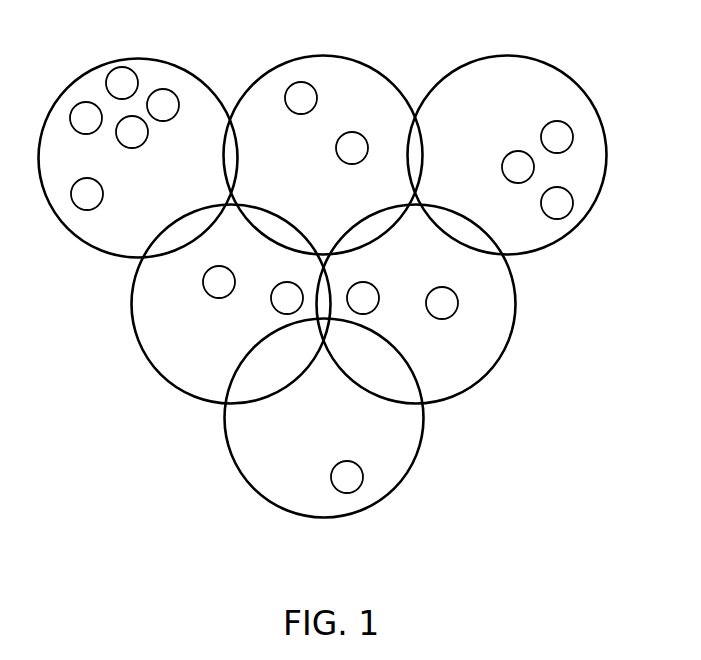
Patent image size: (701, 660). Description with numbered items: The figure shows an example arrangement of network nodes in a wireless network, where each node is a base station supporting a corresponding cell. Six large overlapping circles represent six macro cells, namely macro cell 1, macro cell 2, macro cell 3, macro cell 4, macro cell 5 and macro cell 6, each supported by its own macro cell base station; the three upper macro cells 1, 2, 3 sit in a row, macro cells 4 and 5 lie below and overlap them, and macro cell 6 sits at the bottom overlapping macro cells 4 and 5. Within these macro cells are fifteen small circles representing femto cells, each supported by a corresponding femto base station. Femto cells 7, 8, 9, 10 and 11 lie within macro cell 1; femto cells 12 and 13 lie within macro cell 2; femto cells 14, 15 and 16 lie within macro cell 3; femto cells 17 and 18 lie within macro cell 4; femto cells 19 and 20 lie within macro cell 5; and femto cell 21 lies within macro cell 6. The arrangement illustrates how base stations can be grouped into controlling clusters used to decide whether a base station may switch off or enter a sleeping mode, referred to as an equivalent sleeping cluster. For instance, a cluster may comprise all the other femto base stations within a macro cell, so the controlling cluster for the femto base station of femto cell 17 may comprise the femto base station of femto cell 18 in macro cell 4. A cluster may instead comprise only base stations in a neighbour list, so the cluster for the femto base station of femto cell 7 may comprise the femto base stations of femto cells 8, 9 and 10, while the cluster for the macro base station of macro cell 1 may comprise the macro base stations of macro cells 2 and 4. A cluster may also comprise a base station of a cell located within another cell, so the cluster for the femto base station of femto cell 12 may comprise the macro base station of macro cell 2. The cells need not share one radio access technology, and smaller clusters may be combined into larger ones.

The macro cell 1 is at (67, 227).
The macro cell 2 is at (370, 68).
The macro cell 3 is at (587, 89).
The macro cell 4 is at (160, 378).
The macro cell 5 is at (488, 375).
The macro cell 6 is at (338, 517).
The femto cell 7 is at (122, 83).
The femto cell 8 is at (86, 118).
The femto cell 9 is at (132, 132).
The femto cell 10 is at (163, 105).
The femto cell 11 is at (87, 194).
The femto cell 12 is at (301, 98).
The femto cell 13 is at (352, 148).
The femto cell 14 is at (557, 137).
The femto cell 15 is at (518, 167).
The femto cell 16 is at (557, 203).
The femto cell 17 is at (219, 282).
The femto cell 18 is at (287, 298).
The femto cell 19 is at (363, 298).
The femto cell 20 is at (442, 303).
The femto cell 21 is at (347, 477).